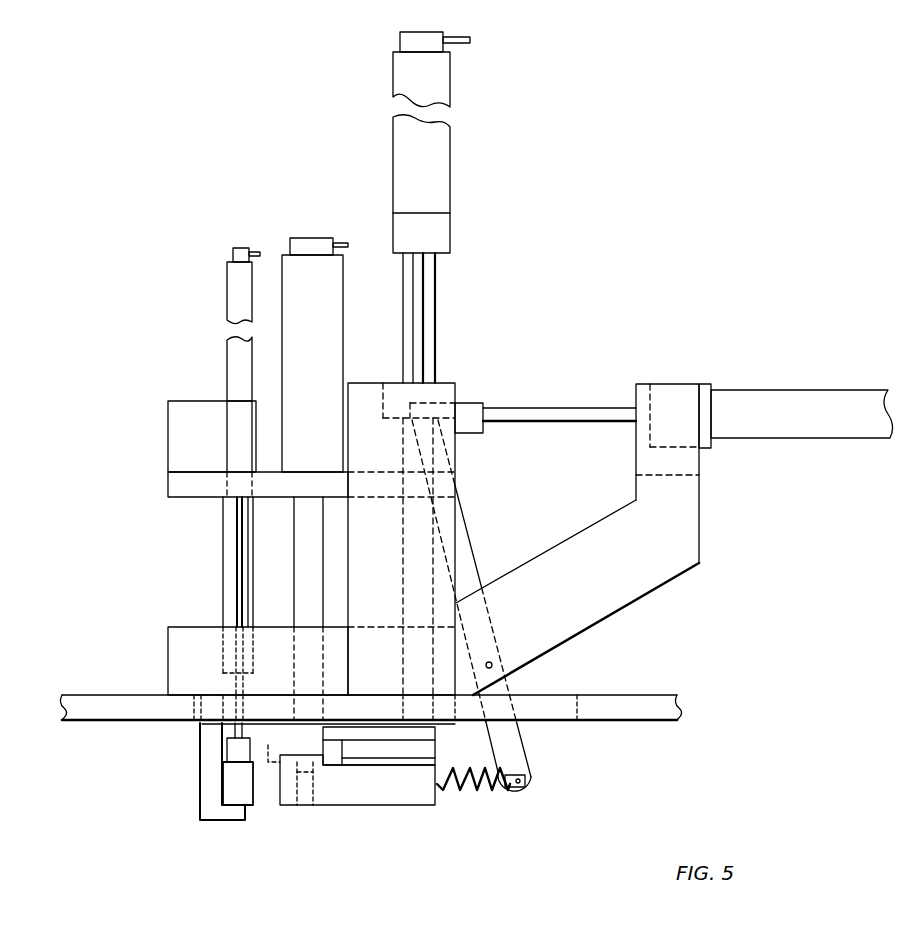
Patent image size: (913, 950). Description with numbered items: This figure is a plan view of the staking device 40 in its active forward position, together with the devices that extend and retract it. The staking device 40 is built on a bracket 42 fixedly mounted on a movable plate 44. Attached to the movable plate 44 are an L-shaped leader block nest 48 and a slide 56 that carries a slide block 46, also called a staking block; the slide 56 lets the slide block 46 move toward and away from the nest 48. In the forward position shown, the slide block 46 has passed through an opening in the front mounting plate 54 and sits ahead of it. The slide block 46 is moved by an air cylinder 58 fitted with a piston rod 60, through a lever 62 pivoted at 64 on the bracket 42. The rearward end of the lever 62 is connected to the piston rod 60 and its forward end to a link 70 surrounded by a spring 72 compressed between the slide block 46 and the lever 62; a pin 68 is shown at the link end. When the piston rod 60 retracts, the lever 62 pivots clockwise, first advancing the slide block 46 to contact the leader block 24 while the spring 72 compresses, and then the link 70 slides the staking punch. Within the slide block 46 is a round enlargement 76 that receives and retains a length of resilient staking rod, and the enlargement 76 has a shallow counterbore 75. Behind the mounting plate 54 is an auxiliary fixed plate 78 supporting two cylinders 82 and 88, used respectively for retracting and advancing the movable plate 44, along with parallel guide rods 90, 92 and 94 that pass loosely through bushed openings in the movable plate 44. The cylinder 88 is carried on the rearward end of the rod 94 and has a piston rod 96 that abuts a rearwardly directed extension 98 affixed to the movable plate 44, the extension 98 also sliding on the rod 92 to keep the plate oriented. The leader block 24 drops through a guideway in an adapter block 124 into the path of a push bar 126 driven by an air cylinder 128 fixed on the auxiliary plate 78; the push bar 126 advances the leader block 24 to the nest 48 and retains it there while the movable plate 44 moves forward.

The leader block 24 is at (247, 787).
The staking device 40 is at (686, 586).
The bracket 42 is at (700, 541).
The movable plate 44 is at (210, 726).
The slide block 46 is at (388, 805).
The leader block nest 48 is at (215, 818).
The mounting plate 54 is at (638, 695).
The slide 56 is at (425, 751).
The air cylinder 58 is at (826, 400).
The piston rod 60 is at (597, 408).
The lever 62 is at (473, 545).
The pivot 64 is at (496, 664).
The spring pin 68 is at (530, 782).
The link 70 is at (512, 768).
The spring 72 is at (470, 795).
The counterbore 75 is at (272, 743).
The enlargement 76 is at (313, 805).
The auxiliary fixed plate 78 is at (168, 480).
The cylinder 82 is at (333, 271).
The cylinder 88 is at (452, 170).
The guide rod 90 is at (223, 590).
The guide rod 92 is at (438, 272).
The guide rod 94 is at (300, 540).
The piston rod 96 is at (426, 310).
The extension 98 is at (450, 383).
The adapter block 124 is at (172, 428).
The push bar 126 is at (235, 535).
The air cylinder 128 is at (232, 282).